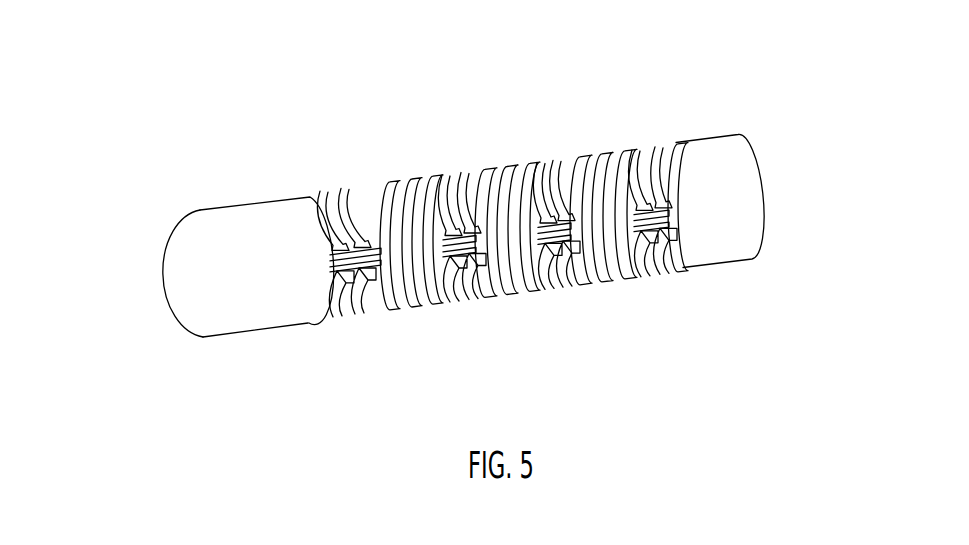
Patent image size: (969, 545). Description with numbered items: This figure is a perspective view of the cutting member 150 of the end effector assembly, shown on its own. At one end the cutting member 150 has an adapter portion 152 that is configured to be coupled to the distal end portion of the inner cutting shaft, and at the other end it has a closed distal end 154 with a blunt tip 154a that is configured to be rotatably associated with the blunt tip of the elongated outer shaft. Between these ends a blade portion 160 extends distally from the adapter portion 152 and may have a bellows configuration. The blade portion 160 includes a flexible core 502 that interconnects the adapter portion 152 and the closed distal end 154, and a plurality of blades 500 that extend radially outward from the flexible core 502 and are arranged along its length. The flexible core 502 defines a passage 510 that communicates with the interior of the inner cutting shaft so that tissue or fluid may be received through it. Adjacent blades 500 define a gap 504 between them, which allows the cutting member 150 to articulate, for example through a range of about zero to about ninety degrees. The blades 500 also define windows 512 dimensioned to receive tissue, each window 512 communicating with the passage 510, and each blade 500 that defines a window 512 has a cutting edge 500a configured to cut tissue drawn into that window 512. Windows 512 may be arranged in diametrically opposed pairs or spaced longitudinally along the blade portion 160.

The cutting member 150 is at (543, 68).
The adapter portion 152 is at (723, 133).
The closed distal end 154 is at (197, 211).
The blunt tip 154a is at (157, 291).
The blade portion 160 is at (442, 176).
The blades 500 is at (359, 312).
The cutting edge 500a is at (412, 190).
The flexible core 502 is at (580, 272).
The gap 504 is at (596, 160).
The passage 510 is at (665, 213).
The window 512 is at (345, 280).